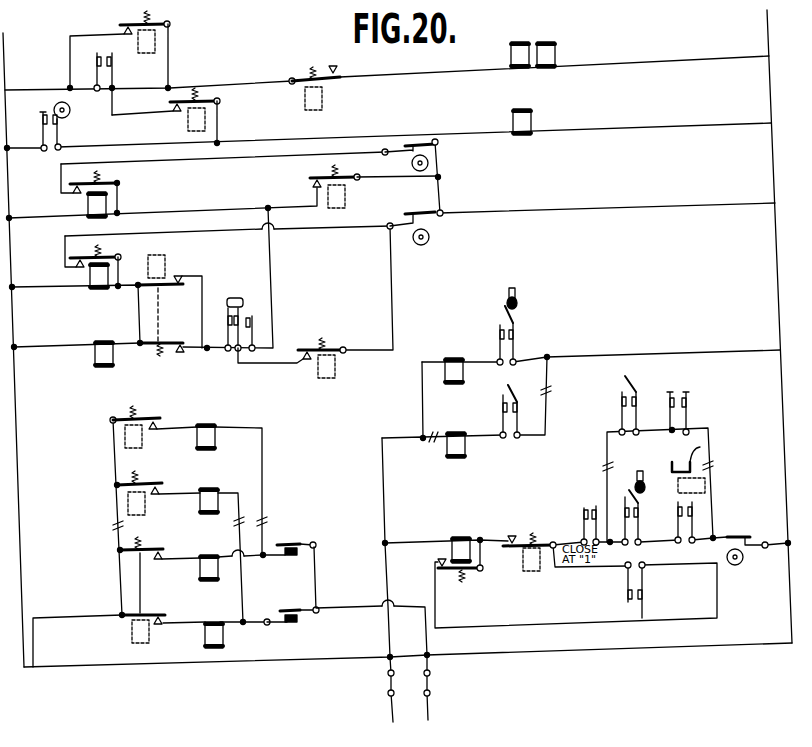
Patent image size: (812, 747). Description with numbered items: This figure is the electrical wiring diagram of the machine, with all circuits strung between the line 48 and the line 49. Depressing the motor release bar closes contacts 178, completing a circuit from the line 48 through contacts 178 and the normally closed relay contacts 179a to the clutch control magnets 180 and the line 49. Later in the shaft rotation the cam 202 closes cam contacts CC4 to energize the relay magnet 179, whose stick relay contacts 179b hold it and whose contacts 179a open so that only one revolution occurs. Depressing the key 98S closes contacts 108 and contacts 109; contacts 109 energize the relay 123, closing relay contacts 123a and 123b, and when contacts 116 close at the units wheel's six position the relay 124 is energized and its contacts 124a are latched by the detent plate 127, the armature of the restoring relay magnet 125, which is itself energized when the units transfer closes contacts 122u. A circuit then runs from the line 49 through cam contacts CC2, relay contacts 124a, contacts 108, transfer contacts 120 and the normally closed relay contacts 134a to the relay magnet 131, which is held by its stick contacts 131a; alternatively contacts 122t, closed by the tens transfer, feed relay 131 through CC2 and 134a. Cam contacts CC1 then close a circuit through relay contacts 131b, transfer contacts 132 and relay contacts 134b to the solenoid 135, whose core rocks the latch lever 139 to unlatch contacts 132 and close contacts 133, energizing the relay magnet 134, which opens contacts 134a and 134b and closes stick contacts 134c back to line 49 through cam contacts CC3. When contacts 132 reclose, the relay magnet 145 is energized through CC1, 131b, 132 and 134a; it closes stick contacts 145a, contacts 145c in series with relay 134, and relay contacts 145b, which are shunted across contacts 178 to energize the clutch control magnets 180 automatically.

The line 48 is at (17, 433).
The line 49 is at (773, 159).
The relay contacts 145b is at (122, 30).
The relay magnet 145 is at (157, 43).
The contacts 178 is at (110, 68).
The stick relay contacts 179b is at (172, 109).
The relay magnet 179 is at (308, 99).
The cam contacts CC4 is at (45, 113).
The cam 202 is at (72, 118).
The relay contacts 179a is at (345, 76).
The clutch control magnets 180 is at (541, 55).
The cam contacts CC3 is at (439, 146).
The cam contacts CC1 is at (441, 229).
The contacts 145c is at (310, 182).
The stick contacts 134c is at (70, 190).
The relay magnet 134 is at (88, 206).
The stick contacts 145a is at (70, 264).
The relay contacts 134a is at (186, 276).
The latch lever 139 is at (235, 297).
The transfer contacts 132 is at (226, 310).
The contacts 133 is at (255, 312).
The relay contacts 131b is at (300, 350).
The relay magnet 131 is at (336, 372).
The relay contacts 134b is at (188, 347).
The solenoid 135 is at (95, 357).
The relay 123 is at (453, 367).
The key 98S is at (517, 296).
The contacts 109 is at (516, 336).
The transfer contacts 120 is at (590, 509).
The contacts 108 is at (630, 494).
The relay contacts 124a is at (678, 536).
The relay 124 is at (200, 573).
The detent plate 127 is at (695, 458).
The cam contacts CC2 is at (745, 536).
The stick contacts 131a is at (437, 562).
The contacts 122t is at (626, 593).
The relay contacts 123a is at (178, 541).
The contacts 116 is at (298, 543).
The relay contacts 123b is at (168, 620).
The relay magnet 125 is at (205, 641).
The contacts 122u is at (282, 668).